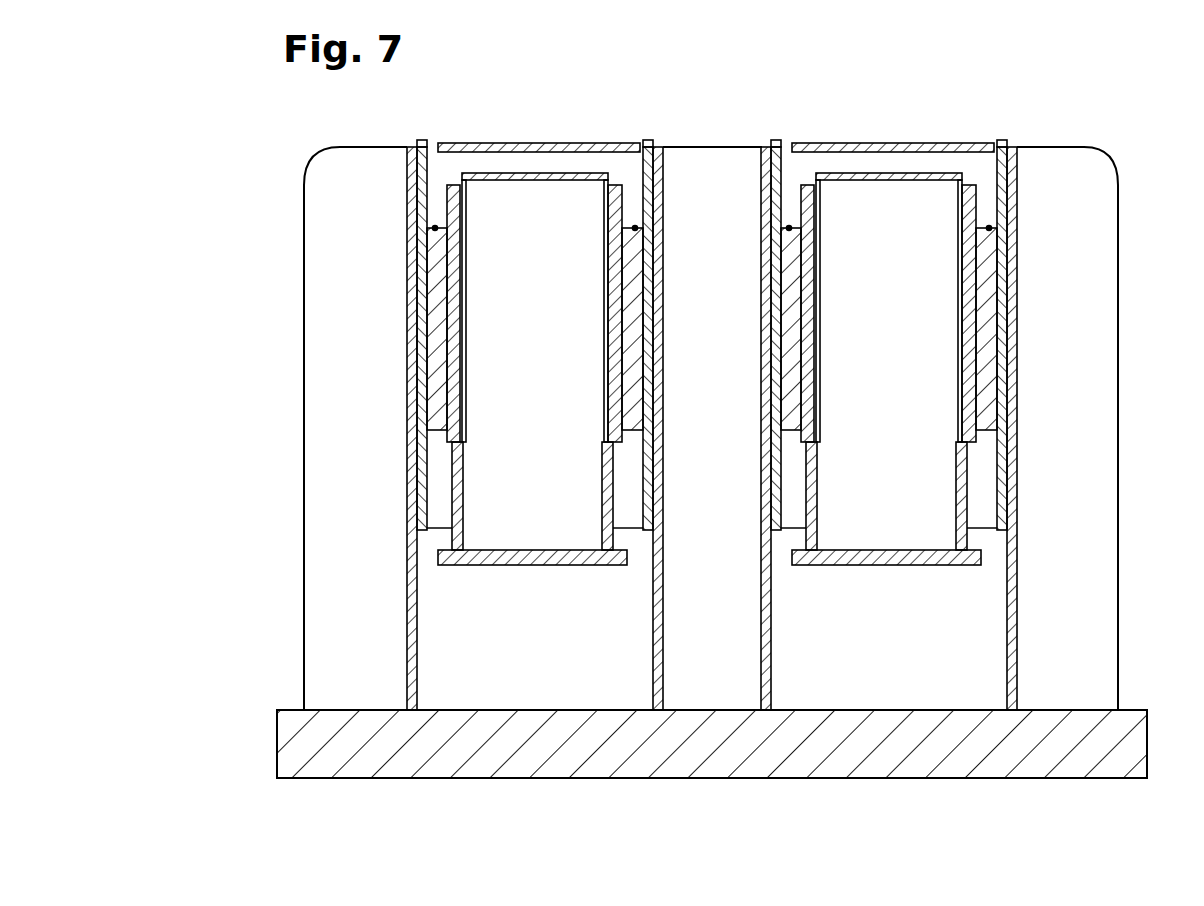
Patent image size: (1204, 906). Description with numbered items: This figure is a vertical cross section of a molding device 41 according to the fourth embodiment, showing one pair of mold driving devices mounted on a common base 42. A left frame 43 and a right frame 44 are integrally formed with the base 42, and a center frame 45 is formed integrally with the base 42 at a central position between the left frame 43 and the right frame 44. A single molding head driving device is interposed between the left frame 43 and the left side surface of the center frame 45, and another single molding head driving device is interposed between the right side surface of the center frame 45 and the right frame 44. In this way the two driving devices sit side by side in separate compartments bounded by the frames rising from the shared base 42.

The molding device 41 is at (1088, 88).
The base 42 is at (348, 753).
The left frame 43 is at (314, 497).
The right frame 44 is at (1091, 478).
The center frame 45 is at (713, 163).